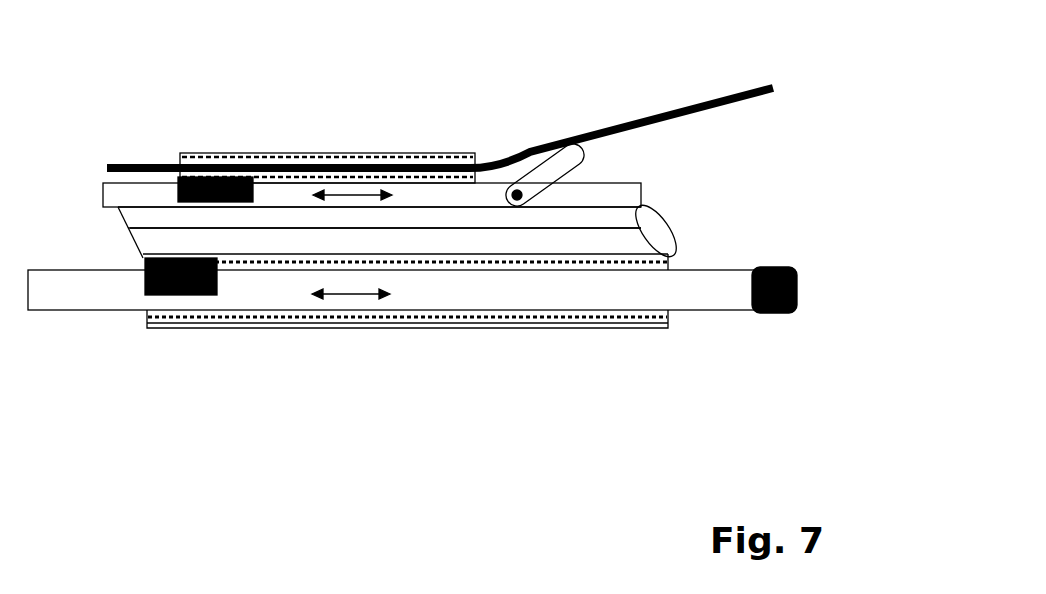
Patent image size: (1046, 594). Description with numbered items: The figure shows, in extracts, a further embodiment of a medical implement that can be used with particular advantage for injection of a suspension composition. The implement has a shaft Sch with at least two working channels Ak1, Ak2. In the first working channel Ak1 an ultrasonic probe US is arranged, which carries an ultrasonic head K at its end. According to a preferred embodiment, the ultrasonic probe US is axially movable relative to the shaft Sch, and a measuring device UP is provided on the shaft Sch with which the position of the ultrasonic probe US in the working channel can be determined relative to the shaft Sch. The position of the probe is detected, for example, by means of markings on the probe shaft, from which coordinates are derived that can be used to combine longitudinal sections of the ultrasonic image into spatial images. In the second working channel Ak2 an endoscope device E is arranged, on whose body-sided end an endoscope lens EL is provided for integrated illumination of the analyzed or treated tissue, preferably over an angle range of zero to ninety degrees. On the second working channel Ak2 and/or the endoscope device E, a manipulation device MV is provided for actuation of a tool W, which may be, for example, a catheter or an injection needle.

The tool W is at (627, 121).
The endoscope device E is at (430, 230).
The manipulation device MV is at (540, 172).
The second working channel Ak2 is at (608, 217).
The endoscope lens EL is at (663, 228).
The measuring device UP is at (140, 265).
The ultrasonic probe US is at (655, 298).
The first working channel Ak1 is at (473, 320).
The shaft Sch is at (240, 320).
The ultrasonic head K is at (767, 318).